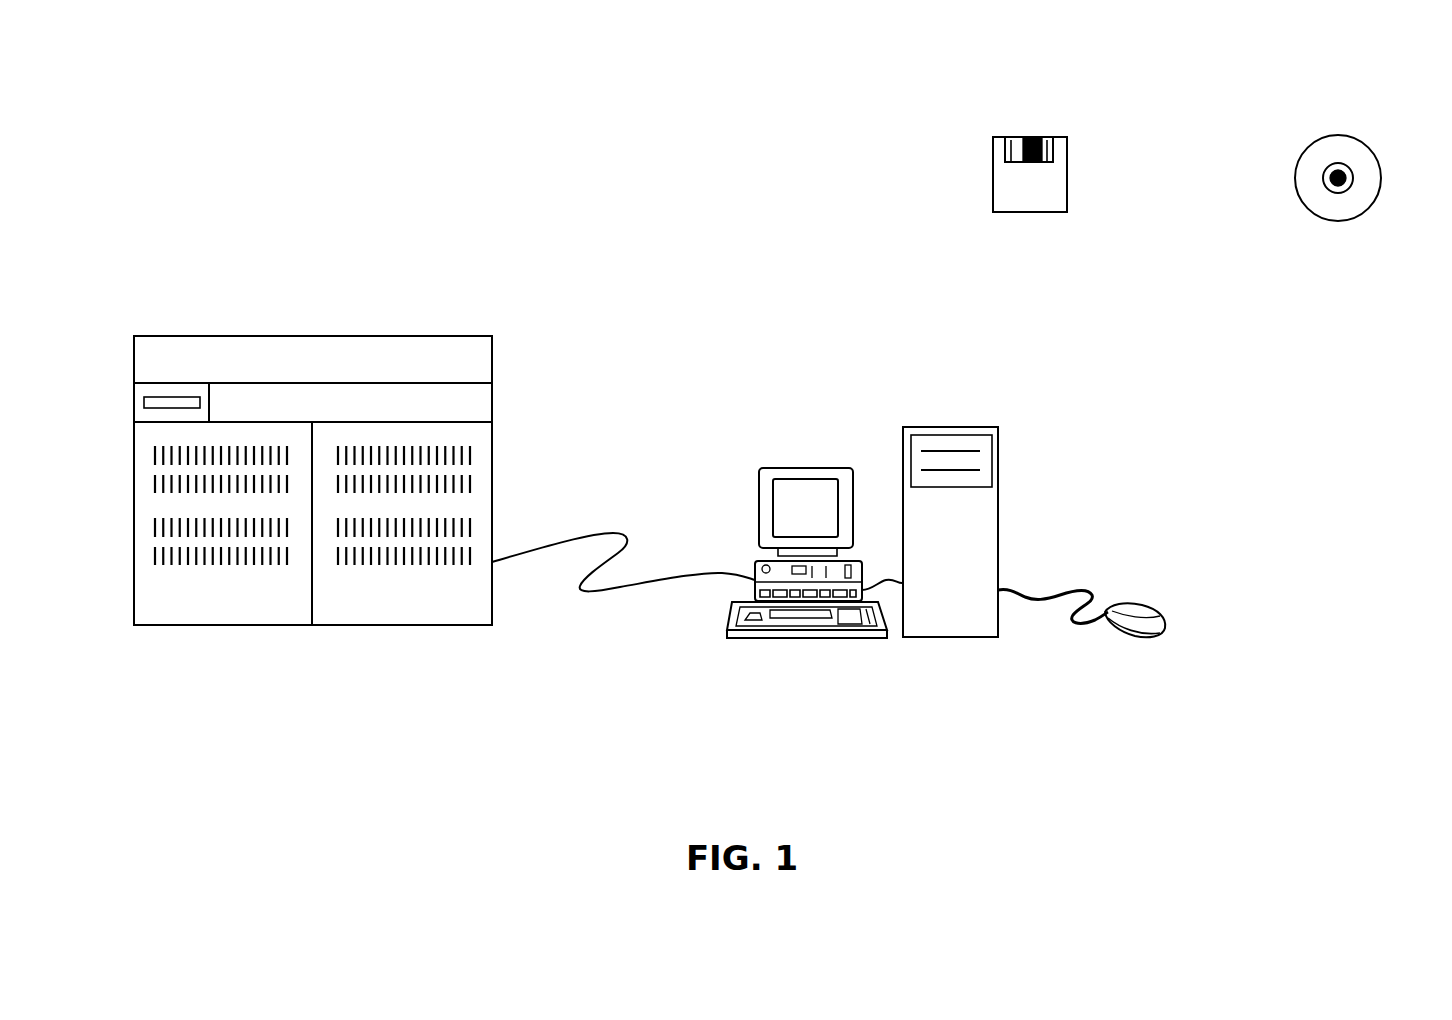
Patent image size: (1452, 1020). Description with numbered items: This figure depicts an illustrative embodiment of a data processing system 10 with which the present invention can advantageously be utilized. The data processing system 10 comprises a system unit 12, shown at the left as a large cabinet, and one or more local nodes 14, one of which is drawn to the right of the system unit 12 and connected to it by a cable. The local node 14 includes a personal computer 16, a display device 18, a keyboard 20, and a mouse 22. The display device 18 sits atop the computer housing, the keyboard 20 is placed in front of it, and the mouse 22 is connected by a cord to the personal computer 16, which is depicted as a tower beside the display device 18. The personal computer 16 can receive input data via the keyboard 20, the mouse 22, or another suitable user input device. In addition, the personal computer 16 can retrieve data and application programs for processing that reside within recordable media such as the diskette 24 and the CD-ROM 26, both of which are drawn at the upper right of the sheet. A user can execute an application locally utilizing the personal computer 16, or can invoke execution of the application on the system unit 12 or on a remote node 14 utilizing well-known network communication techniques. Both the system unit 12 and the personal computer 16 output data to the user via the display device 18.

The data processing system 10 is at (672, 373).
The system unit 12 is at (492, 477).
The local node 14 is at (872, 705).
The personal computer 16 is at (998, 500).
The display device 18 is at (818, 468).
The keyboard 20 is at (763, 631).
The mouse 22 is at (1153, 610).
The diskette 24 is at (1058, 137).
The CD-ROM 26 is at (1368, 142).